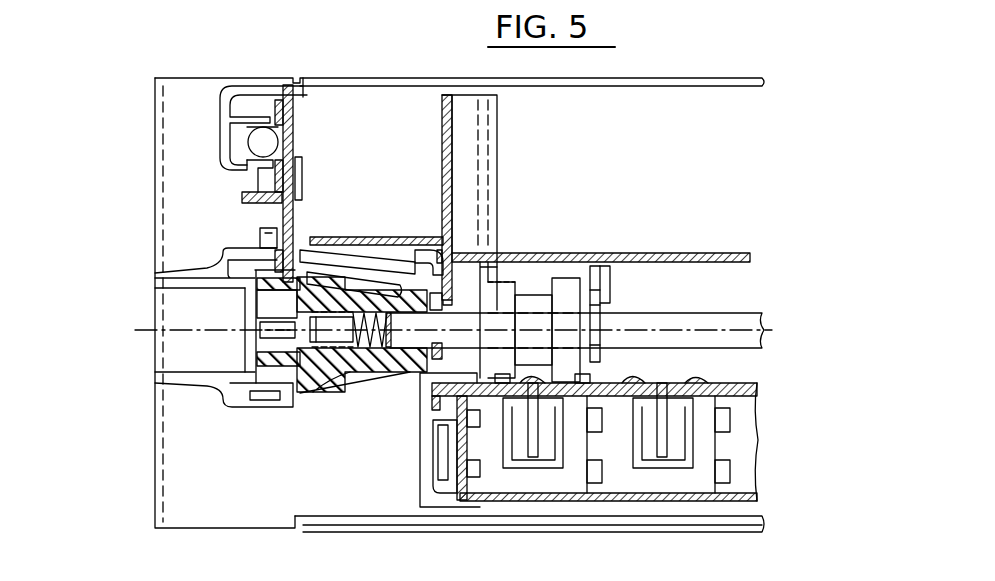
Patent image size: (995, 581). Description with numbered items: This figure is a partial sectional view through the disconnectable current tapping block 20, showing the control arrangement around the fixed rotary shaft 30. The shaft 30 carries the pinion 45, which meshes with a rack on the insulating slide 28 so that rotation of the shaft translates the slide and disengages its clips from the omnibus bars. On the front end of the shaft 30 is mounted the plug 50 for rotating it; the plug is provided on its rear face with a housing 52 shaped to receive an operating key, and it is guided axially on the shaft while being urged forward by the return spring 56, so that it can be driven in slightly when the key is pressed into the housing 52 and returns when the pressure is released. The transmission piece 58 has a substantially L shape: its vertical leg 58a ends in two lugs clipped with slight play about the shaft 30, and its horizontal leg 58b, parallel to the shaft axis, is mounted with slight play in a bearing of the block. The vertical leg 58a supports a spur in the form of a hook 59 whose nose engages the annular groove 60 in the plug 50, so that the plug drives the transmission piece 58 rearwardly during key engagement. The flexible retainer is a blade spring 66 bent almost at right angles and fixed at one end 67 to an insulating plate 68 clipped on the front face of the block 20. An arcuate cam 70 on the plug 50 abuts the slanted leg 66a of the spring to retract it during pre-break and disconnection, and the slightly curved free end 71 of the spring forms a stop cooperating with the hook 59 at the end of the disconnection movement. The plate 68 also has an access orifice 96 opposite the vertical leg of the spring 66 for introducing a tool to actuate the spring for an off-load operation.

The disconnectable current tapping block 20 is at (133, 480).
The slide 28 is at (660, 501).
The rotary shaft 30 is at (750, 325).
The pinion 45 is at (565, 292).
The plug 50 is at (318, 380).
The housing 52 is at (263, 298).
The return spring 56 is at (350, 372).
The transmission piece 58 is at (602, 253).
The vertical leg 58a is at (455, 300).
The horizontal leg 58b is at (707, 253).
The hook 59 is at (416, 262).
The annular groove 60 is at (413, 373).
The blade spring 66 is at (347, 204).
The slanted leg 66a is at (332, 237).
The end of the blade spring 67 is at (300, 168).
The insulating plate 68 is at (212, 77).
The cam 70 is at (400, 262).
The free end of the blade spring 71 is at (455, 247).
The access orifice 96 is at (263, 240).